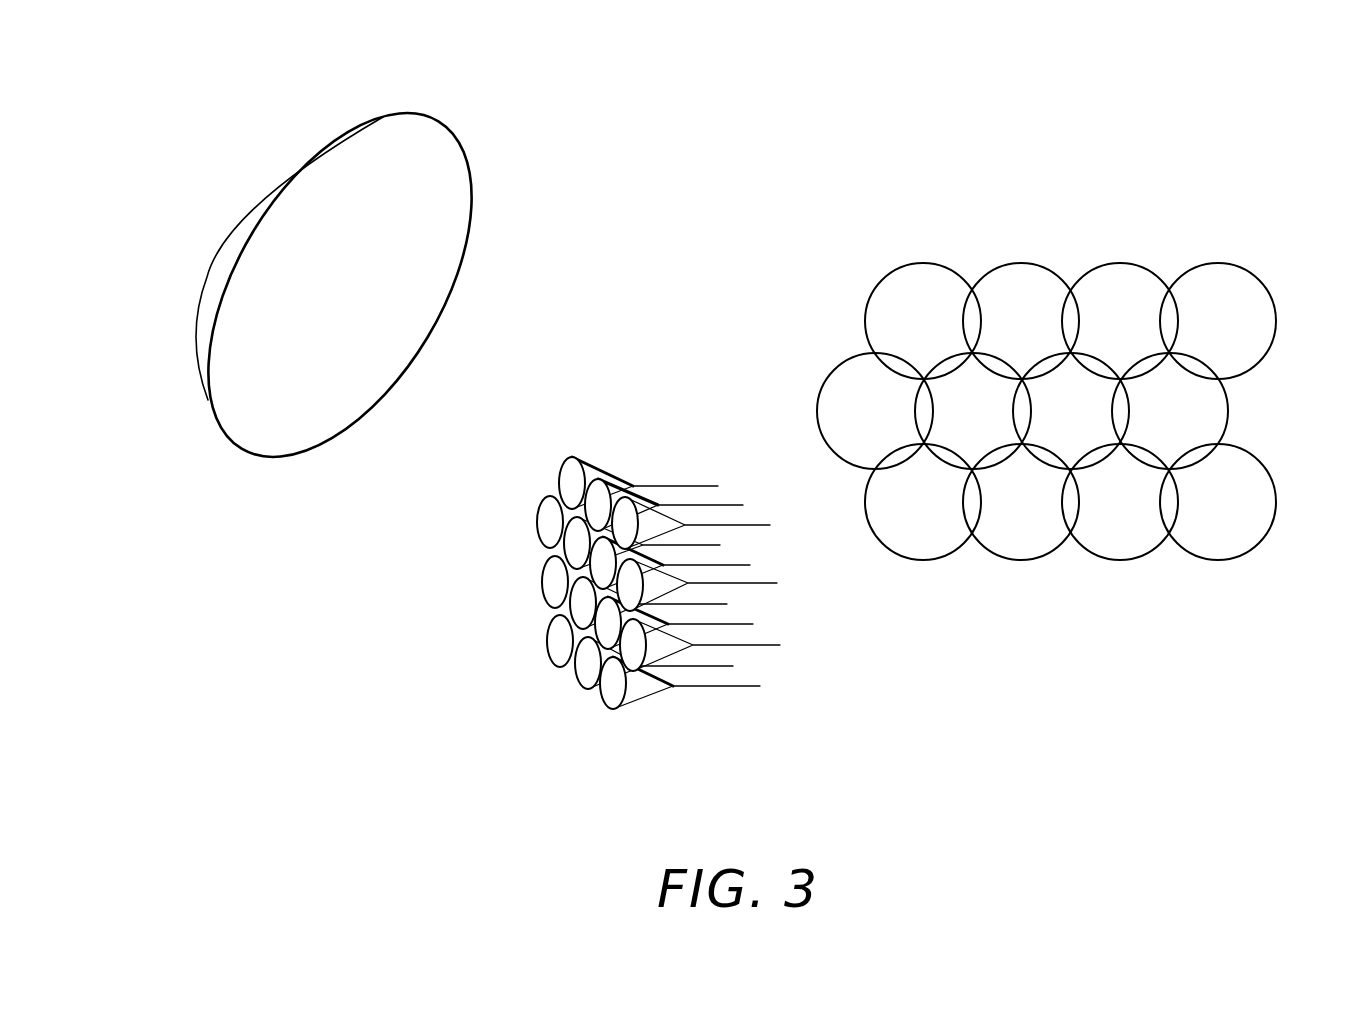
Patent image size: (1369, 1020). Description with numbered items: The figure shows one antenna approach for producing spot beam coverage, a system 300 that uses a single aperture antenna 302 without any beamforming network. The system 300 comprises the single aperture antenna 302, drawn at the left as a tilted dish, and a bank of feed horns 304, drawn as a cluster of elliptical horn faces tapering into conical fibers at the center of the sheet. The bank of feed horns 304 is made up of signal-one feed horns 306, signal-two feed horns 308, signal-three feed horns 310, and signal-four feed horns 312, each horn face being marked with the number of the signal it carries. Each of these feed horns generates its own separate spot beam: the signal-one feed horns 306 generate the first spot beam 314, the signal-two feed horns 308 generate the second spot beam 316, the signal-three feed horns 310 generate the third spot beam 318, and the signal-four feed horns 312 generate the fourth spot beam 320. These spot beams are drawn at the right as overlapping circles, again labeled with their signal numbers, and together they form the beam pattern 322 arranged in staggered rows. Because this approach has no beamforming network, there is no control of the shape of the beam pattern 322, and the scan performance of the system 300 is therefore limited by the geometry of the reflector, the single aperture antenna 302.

The system 300 is at (683, 193).
The single aperture antenna 302 is at (230, 207).
The bank of feed horns 304 is at (657, 604).
The signal 1 feed horns 306 is at (598, 467).
The signal 2 feed horns 308 is at (543, 575).
The signal 3 feed horns 310 is at (570, 455).
The signal 4 feed horns 312 is at (586, 689).
The spot beam 1 314 is at (935, 262).
The spot beam 2 316 is at (1036, 263).
The spot beam 3 318 is at (832, 370).
The spot beam 4 320 is at (1229, 412).
The beam pattern 322 is at (1041, 331).